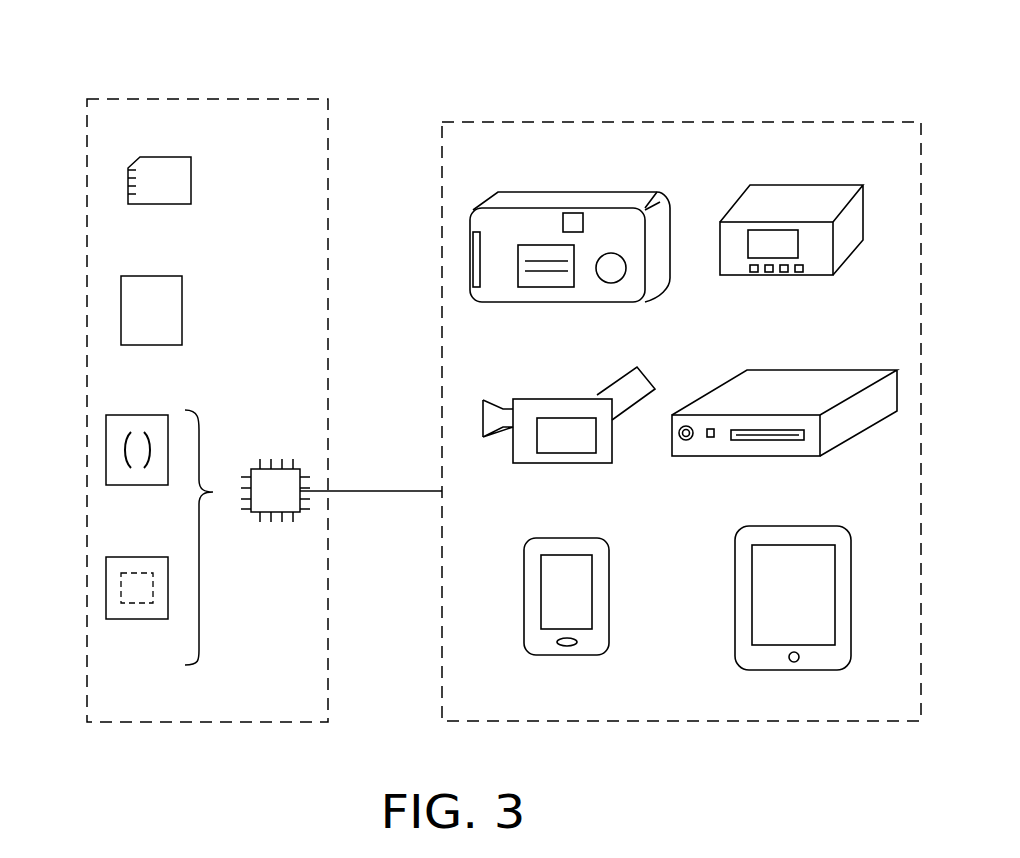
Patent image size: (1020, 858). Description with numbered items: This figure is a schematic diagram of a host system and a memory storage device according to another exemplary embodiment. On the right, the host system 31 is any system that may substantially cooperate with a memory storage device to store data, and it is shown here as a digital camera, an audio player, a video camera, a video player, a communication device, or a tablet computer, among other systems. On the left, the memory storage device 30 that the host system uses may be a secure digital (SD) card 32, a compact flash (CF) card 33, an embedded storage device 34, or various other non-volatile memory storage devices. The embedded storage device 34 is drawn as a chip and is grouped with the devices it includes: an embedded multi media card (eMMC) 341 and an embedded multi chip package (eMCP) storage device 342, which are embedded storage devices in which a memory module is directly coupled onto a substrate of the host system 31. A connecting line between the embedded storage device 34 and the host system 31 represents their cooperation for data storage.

The memory storage device 30 is at (198, 98).
The host system 31 is at (605, 120).
The secure digital (SD) card 32 is at (128, 188).
The compact flash (CF) card 33 is at (121, 312).
The embedded storage device 34 is at (273, 462).
The embedded multi media card (eMMC) 341 is at (106, 452).
The embedded multi chip package (eMCP) storage device 342 is at (106, 590).